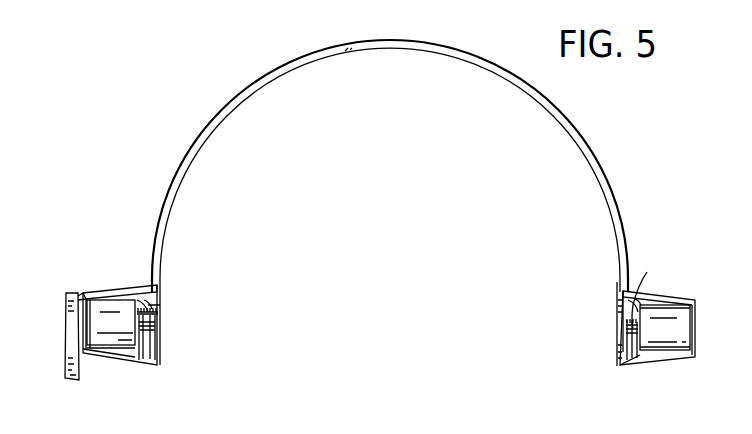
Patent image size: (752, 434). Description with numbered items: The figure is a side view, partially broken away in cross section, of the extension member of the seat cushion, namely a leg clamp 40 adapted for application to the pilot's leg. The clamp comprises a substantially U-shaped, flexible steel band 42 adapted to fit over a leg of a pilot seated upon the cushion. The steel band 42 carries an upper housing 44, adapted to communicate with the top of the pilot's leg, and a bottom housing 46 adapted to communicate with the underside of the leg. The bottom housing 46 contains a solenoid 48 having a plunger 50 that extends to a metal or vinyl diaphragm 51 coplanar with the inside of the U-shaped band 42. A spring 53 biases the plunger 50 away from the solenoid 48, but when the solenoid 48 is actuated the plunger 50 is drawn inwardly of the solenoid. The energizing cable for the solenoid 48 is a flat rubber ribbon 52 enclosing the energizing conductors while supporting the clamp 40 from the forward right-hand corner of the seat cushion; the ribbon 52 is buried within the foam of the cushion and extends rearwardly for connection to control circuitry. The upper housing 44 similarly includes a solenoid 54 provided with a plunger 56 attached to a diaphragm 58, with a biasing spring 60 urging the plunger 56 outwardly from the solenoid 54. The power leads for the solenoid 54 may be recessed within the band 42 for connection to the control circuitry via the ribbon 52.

The leg clamp 40 is at (419, 153).
The flexible steel band 42 is at (410, 42).
The upper housing 44 is at (680, 295).
The bottom housing 46 is at (113, 290).
The solenoid 48 is at (103, 333).
The plunger 50 is at (148, 363).
The diaphragm 51 is at (155, 338).
The flat rubber ribbon 52 is at (65, 375).
The spring 53 is at (160, 303).
The solenoid 54 is at (663, 343).
The plunger 56 is at (632, 340).
The diaphragm 58 is at (617, 340).
The biasing spring 60 is at (650, 270).